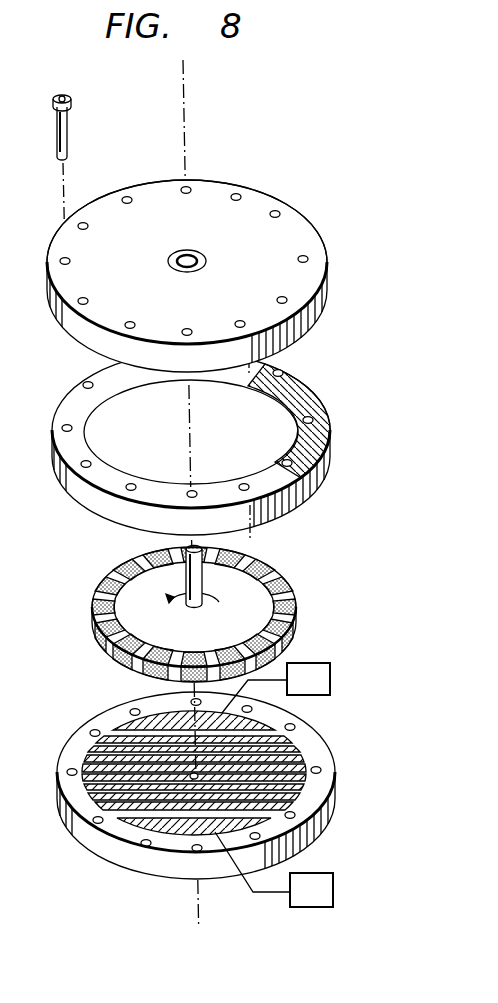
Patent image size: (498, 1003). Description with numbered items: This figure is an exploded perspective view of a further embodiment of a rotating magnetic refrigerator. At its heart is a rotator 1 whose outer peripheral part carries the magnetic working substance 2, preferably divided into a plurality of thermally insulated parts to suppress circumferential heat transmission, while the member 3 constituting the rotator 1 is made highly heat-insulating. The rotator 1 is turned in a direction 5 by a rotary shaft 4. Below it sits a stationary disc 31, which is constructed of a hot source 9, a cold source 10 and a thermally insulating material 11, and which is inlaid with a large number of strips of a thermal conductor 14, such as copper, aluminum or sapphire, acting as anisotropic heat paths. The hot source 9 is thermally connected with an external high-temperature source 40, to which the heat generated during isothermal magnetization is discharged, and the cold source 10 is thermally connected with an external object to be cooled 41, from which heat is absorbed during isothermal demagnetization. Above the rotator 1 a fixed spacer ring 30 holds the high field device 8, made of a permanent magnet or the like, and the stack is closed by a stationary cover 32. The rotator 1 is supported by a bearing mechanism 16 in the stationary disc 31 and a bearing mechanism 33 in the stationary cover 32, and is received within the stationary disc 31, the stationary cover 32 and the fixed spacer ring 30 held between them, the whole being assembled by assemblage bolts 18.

The rotator 1 is at (188, 605).
The magnetic working substance 2 is at (298, 610).
The member constituting the rotator 3 is at (252, 592).
The rotary shaft 4 is at (186, 583).
The direction of rotation 5 is at (214, 594).
The high field device 8 is at (303, 400).
The hot source 9 is at (170, 717).
The cold source 10 is at (135, 830).
The thermally insulating material 11 is at (307, 735).
The thermal conductor 14 is at (85, 765).
The bearing mechanism 16 is at (193, 778).
The assemblage bolts 18 is at (70, 144).
The fixed spacer ring 30 is at (181, 440).
The stationary disc 31 is at (196, 794).
The stationary cover 32 is at (179, 276).
The bearing mechanism 33 is at (167, 262).
The external high-temperature source 40 is at (330, 673).
The external object to be cooled 41 is at (312, 907).